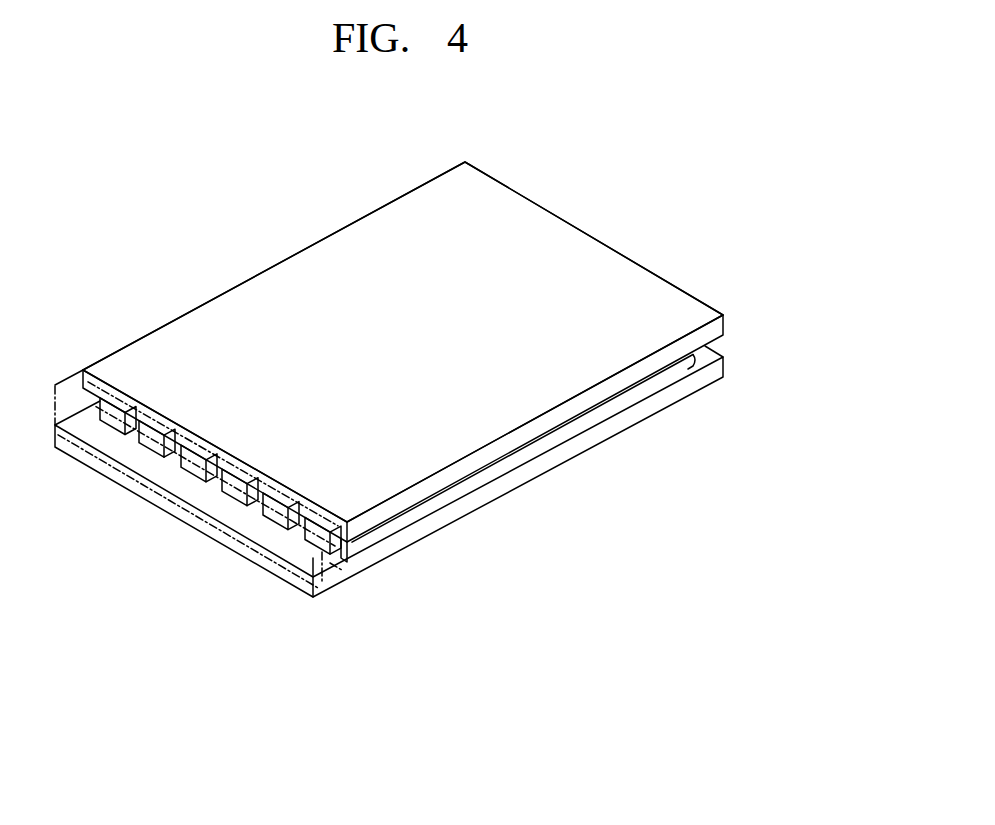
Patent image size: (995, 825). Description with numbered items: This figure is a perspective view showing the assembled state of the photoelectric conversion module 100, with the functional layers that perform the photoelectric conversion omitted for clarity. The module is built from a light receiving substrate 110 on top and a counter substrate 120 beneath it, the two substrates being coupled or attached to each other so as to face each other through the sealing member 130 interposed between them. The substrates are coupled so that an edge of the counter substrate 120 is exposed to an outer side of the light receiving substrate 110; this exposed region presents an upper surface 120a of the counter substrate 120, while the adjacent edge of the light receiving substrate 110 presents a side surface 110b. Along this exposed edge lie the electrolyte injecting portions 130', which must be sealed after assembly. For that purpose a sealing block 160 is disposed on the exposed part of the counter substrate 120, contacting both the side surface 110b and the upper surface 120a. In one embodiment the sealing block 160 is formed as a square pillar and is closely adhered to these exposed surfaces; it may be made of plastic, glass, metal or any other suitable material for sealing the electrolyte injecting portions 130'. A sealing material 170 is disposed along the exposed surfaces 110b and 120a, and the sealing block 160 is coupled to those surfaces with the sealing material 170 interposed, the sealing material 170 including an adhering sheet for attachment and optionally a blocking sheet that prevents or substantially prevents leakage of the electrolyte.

The photoelectric conversion module 100 is at (632, 190).
The light receiving substrate 110 is at (608, 387).
The side surface of the light receiving substrate 110b is at (275, 483).
The counter substrate 120 is at (577, 447).
The upper surface of the counter substrate 120a is at (190, 491).
The sealing member 130 is at (518, 459).
The electrolyte injecting portions 130' is at (218, 510).
The sealing block 160 is at (316, 598).
The sealing material 170 is at (336, 567).